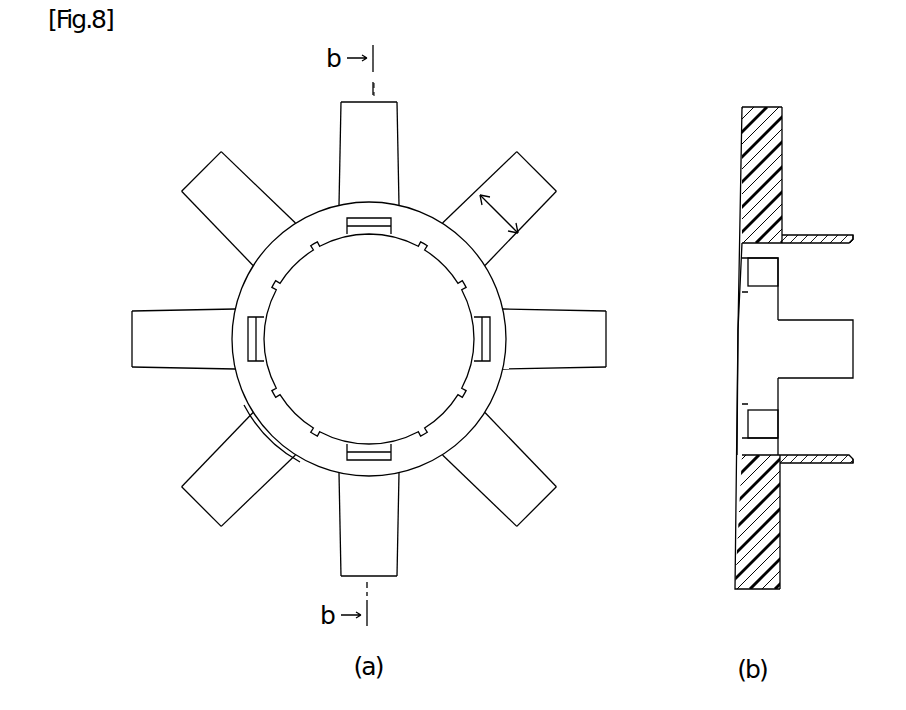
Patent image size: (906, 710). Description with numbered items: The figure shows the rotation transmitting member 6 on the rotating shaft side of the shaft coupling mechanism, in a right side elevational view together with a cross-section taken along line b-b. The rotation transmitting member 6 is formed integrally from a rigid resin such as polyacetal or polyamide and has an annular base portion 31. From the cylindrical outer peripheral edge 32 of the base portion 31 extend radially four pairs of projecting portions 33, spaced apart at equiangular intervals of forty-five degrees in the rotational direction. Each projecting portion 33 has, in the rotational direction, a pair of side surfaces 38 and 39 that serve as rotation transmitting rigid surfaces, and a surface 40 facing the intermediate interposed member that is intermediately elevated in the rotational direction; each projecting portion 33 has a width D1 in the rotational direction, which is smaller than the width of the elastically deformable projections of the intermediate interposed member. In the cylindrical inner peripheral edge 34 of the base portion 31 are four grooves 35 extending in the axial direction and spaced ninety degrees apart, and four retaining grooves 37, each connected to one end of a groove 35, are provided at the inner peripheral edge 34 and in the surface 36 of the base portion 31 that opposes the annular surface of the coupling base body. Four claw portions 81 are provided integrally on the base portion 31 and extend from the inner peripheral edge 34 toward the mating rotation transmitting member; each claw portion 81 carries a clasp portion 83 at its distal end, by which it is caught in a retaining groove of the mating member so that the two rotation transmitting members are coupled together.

The rotation transmitting member 6 is at (519, 332).
The annular base portion 31 is at (255, 381).
The cylindrical outer peripheral edge 32 is at (420, 474).
The projecting portions 33 is at (519, 332).
The cylindrical inner peripheral edge 34 is at (408, 240).
The grooves 35 is at (298, 258).
The surface of the base portion 36 is at (737, 381).
The retaining grooves 37 is at (745, 274).
The side surface 38 is at (343, 152).
The side surface 39 is at (402, 157).
The surface of the projecting portion 40 is at (378, 115).
The claw portions 81 is at (370, 224).
The clasp portion 83 is at (847, 235).
The width of the projecting portion D1 is at (500, 215).